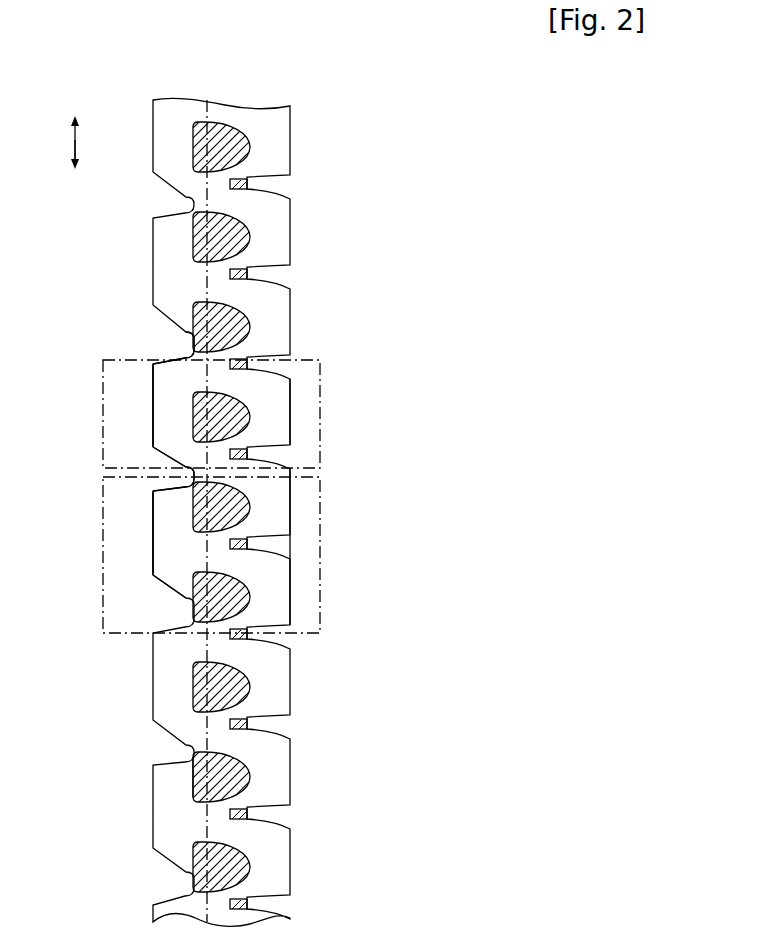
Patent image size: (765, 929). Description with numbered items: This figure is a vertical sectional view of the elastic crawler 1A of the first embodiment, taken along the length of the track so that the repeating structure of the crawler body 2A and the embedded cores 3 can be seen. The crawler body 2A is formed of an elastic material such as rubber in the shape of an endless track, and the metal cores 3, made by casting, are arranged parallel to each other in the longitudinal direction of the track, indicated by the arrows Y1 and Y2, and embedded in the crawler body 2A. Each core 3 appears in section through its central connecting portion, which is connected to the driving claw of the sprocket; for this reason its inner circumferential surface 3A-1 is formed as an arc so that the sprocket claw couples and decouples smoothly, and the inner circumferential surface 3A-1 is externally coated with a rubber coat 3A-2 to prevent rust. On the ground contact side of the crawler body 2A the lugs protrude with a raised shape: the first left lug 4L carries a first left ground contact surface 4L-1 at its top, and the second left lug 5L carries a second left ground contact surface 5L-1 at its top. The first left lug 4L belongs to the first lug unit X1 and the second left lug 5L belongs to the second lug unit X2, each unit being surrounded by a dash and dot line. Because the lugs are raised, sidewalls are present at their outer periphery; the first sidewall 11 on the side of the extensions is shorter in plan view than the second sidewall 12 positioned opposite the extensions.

The elastic crawler 1A is at (291, 68).
The crawler body 2A is at (133, 266).
The core 3 is at (249, 767).
The inner circumferential surface 3A-1 is at (248, 794).
The rubber coat 3A-2 is at (193, 777).
The first left lug 4L is at (146, 535).
The first left ground contact surface 4L-1 is at (153, 574).
The second left lug 5L is at (146, 408).
The second left ground contact surface 5L-1 is at (153, 393).
The first sidewall 11 is at (168, 358).
The second sidewall 12 is at (187, 465).
The first lug unit X1 is at (326, 620).
The second lug unit X2 is at (326, 396).
The longitudinal direction arrow Y1 is at (81, 128).
The longitudinal direction arrow Y2 is at (81, 172).